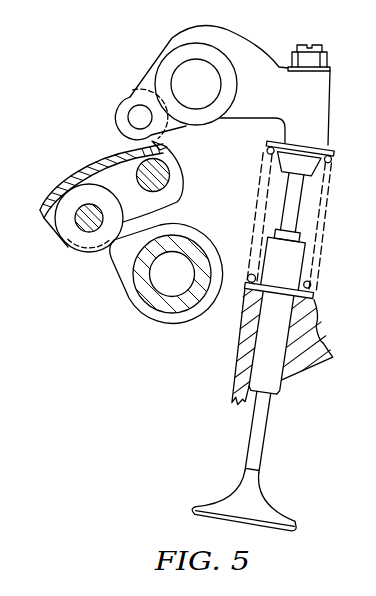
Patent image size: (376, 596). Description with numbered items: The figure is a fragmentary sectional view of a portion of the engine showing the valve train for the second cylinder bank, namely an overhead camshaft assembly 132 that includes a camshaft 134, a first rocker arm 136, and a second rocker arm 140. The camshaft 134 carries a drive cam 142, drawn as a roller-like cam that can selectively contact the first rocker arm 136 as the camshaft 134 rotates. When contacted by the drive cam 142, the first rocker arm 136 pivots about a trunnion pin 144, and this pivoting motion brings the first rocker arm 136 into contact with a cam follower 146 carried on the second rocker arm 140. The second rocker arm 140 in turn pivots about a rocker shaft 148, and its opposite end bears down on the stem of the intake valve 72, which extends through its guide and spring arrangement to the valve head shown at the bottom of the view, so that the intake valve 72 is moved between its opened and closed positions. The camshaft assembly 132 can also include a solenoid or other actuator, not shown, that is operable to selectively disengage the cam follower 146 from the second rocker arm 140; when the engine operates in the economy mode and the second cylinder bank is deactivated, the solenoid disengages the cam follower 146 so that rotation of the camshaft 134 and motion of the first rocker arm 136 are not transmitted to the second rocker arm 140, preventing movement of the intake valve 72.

The overhead camshaft assembly 132 is at (81, 83).
The camshaft 134 is at (161, 326).
The first rocker arm 136 is at (82, 168).
The second rocker arm 140 is at (232, 43).
The drive cam 142 is at (122, 252).
The trunnion pin 144 is at (82, 240).
The cam follower 146 is at (118, 97).
The rocker shaft 148 is at (188, 72).
The intake valve 72 is at (268, 430).